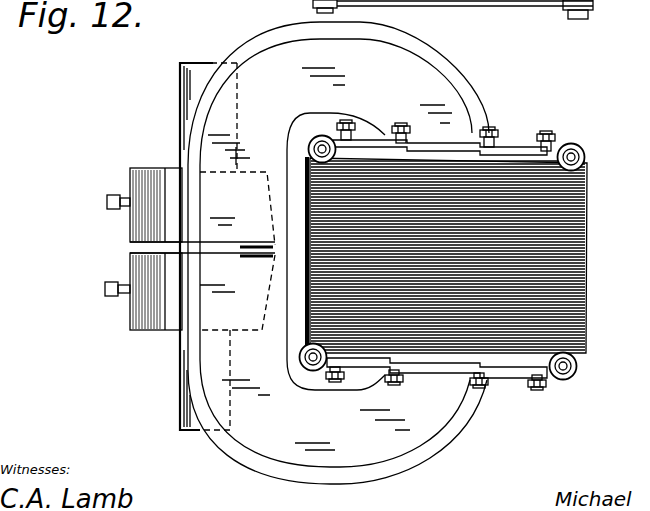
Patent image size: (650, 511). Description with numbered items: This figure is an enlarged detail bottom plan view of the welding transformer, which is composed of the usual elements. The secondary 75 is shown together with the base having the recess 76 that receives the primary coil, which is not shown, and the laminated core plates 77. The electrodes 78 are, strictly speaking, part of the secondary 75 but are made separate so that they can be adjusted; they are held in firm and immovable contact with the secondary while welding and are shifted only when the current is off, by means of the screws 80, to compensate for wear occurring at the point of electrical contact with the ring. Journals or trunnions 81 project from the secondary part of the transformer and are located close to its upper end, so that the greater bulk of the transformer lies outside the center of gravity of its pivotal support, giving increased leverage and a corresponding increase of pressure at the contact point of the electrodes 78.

The secondary 75 is at (135, 170).
The recess 76 is at (466, 100).
The laminated core plates 77 is at (585, 244).
The electrodes 78 is at (240, 254).
The screws 80 is at (112, 281).
The journals or trunnions 81 is at (179, 97).